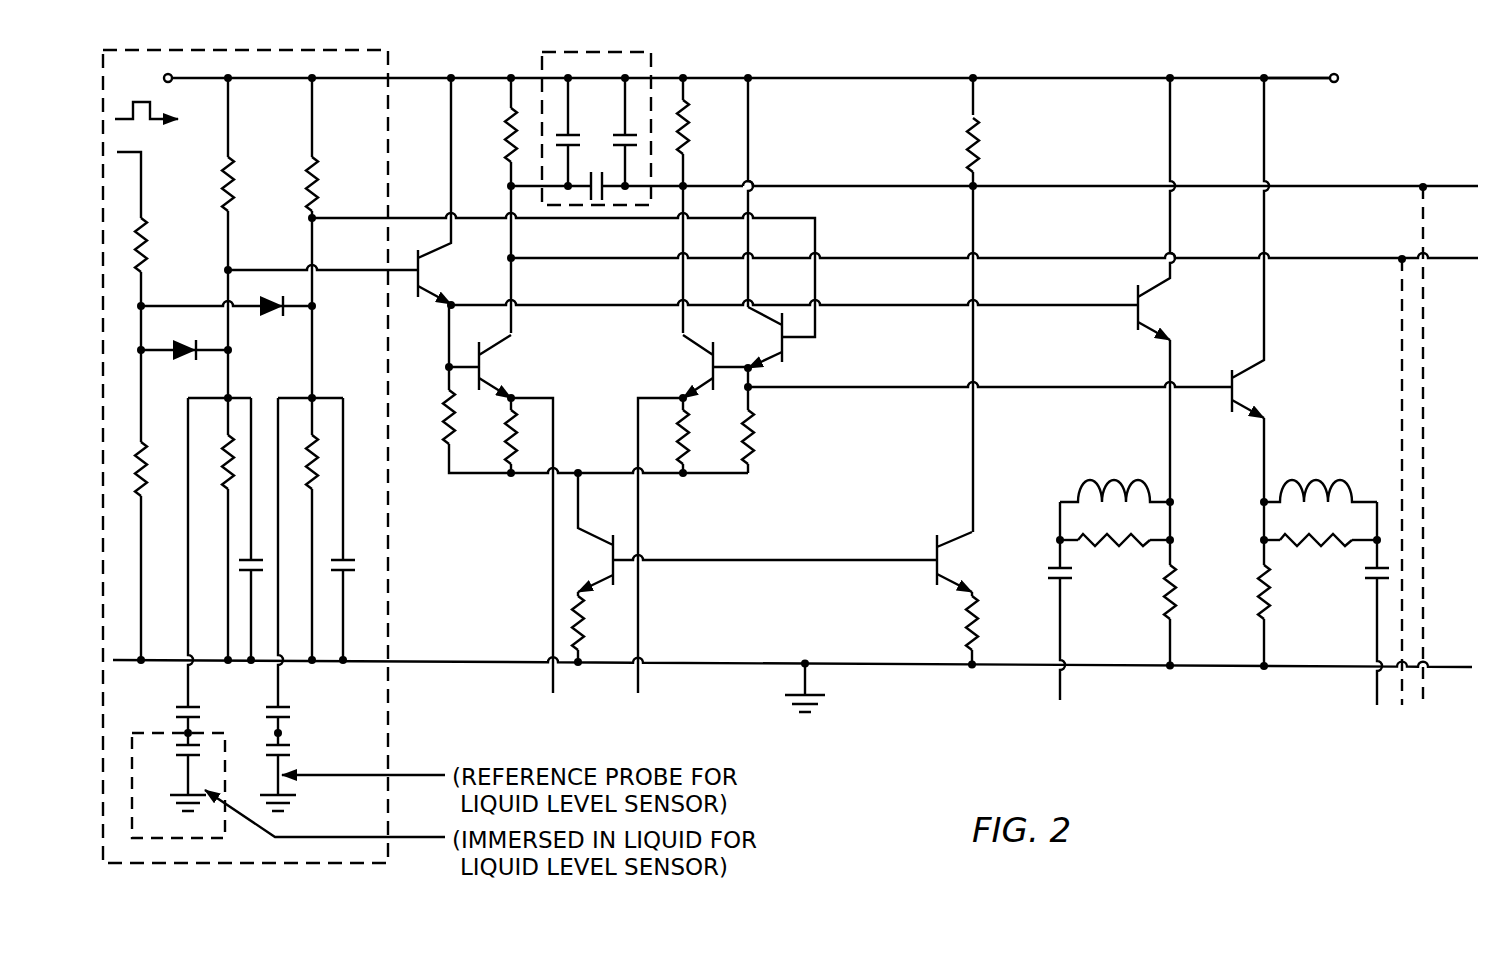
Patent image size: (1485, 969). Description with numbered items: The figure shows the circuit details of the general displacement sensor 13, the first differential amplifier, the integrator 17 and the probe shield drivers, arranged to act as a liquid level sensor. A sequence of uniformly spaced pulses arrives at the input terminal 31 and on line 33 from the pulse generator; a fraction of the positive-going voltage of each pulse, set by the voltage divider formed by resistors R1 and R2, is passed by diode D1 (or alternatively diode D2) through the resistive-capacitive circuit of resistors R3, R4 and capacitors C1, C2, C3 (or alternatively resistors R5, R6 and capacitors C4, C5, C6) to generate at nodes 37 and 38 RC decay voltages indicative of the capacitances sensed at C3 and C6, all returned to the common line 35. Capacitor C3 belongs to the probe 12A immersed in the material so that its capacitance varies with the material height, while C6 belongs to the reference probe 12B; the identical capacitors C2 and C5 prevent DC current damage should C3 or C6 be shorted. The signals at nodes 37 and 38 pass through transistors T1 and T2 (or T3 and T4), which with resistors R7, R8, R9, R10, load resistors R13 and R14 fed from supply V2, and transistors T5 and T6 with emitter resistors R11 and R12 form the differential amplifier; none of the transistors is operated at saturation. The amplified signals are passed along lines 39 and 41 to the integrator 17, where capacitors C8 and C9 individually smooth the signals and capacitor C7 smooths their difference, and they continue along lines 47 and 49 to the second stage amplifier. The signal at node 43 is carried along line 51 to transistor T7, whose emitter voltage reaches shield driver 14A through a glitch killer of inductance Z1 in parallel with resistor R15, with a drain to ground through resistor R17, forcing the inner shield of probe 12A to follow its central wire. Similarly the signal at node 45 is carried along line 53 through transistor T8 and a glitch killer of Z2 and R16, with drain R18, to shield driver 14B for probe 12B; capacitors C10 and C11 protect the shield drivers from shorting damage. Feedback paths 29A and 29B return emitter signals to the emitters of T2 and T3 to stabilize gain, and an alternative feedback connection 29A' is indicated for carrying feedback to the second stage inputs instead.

The general displacement sensor circuit 13 is at (388, 50).
The integrator 17 is at (651, 52).
The input terminal 31 is at (192, 77).
The pulse input line 33 is at (143, 152).
The common ground line 35 is at (158, 662).
The node 37 is at (230, 398).
The node 38 is at (314, 398).
The amplified signal line 39 is at (508, 198).
The amplified signal line 41 is at (683, 200).
The node 43 is at (447, 306).
The node 45 is at (752, 390).
The line 47 is at (1058, 187).
The line 49 is at (1053, 258).
The line 51 is at (1050, 305).
The line 53 is at (1048, 388).
The probe 12A is at (188, 733).
The probe 12B is at (284, 733).
The shield driver 14A is at (1069, 658).
The shield driver 14B is at (1377, 705).
The feedback path 29A is at (544, 564).
The feedback path 29B is at (1433, 705).
The alternative feedback line 29A' is at (1405, 498).
The voltage divider resistor R1 is at (161, 330).
The voltage divider resistor R2 is at (161, 483).
The resistor R3 is at (248, 256).
The resistor R4 is at (215, 478).
The resistor R5 is at (322, 470).
The resistor R6 is at (332, 256).
The resistor R7 is at (580, 431).
The resistor R8 is at (492, 435).
The resistor R9 is at (702, 435).
The resistor R10 is at (775, 441).
The resistor R11 is at (604, 629).
The resistor R12 is at (945, 630).
The resistor R13 is at (490, 205).
The resistor R14 is at (710, 205).
The resistor R15 is at (1115, 527).
The resistor R16 is at (1320, 527).
The resistor R17 is at (1071, 374).
The resistor R18 is at (1291, 586).
The capacitor C1 is at (262, 531).
The capacitor C2 is at (171, 565).
The probe capacitor C3 is at (178, 785).
The capacitor C4 is at (355, 531).
The capacitor C5 is at (260, 565).
The reference probe capacitor C6 is at (263, 773).
The capacitor C7 is at (602, 174).
The capacitor C8 is at (563, 123).
The capacitor C9 is at (613, 134).
The capacitor C10 is at (1085, 545).
The capacitor C11 is at (1357, 545).
The diode D1 is at (184, 365).
The diode D2 is at (226, 321).
The transistor T1 is at (345, 191).
The transistor T2 is at (487, 366).
The transistor T3 is at (711, 366).
The transistor T4 is at (759, 337).
The transistor T5 is at (754, 530).
The transistor T6 is at (958, 562).
The transistor T7 is at (1159, 209).
The transistor T8 is at (1253, 248).
The inductance Z1 is at (1117, 479).
The inductance Z2 is at (1318, 462).
The supply voltage V2 is at (1320, 84).